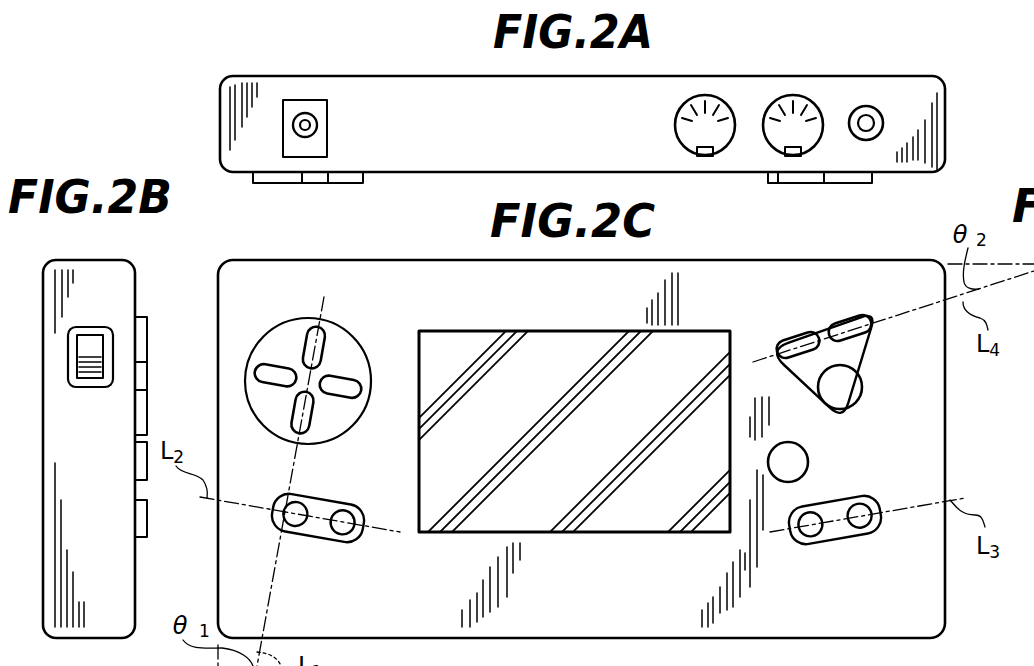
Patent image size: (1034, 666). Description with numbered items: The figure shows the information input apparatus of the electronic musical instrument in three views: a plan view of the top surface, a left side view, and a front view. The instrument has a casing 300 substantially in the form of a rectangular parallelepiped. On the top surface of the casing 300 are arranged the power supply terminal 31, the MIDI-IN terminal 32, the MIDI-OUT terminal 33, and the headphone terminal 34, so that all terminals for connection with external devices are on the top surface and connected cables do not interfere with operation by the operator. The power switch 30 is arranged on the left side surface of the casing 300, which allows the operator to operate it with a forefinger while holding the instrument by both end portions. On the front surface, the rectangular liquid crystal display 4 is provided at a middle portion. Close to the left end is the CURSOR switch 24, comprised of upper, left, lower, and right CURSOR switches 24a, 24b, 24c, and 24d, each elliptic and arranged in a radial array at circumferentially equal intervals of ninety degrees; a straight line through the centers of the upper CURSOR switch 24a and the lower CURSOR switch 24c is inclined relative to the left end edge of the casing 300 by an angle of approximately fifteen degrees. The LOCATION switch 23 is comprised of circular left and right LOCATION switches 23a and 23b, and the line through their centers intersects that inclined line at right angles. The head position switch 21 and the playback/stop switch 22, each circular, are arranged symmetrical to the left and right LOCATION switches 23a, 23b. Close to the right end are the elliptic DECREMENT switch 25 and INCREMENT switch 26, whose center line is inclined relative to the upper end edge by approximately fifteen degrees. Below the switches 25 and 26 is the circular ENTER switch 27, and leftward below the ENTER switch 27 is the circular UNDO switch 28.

In FIG. 2C, the liquid crystal display 4 is at (605, 520).
In FIG. 2C, the head position switch 21 is at (808, 535).
In FIG. 2C, the playback/stop switch 22 is at (862, 527).
In FIG. 2C, the LOCATION switch 23 is at (297, 560).
In FIG. 2C, the left LOCATION switch 23a is at (297, 528).
In FIG. 2C, the right LOCATION switch 23b is at (344, 534).
In FIG. 2C, the CURSOR switch 24 is at (320, 366).
In FIG. 2C, the upper CURSOR switch 24a is at (325, 343).
In FIG. 2C, the left CURSOR switch 24b is at (281, 365).
In FIG. 2C, the lower CURSOR switch 24c is at (298, 418).
In FIG. 2C, the right CURSOR switch 24d is at (344, 402).
In FIG. 2C, the DECREMENT switch 25 is at (790, 335).
In FIG. 2C, the INCREMENT switch 26 is at (855, 316).
In FIG. 2C, the ENTER switch 27 is at (853, 390).
In FIG. 2C, the UNDO switch 28 is at (798, 461).
In FIG. 2B, the power switch 30 is at (94, 345).
In FIG. 2A, the power supply terminal 31 is at (307, 114).
In FIG. 2A, the MIDI-IN terminal 32 is at (688, 96).
In FIG. 2A, the MIDI-OUT terminal 33 is at (776, 96).
In FIG. 2A, the headphone terminal 34 is at (867, 106).
In FIG. 2C, the casing 300 is at (945, 600).